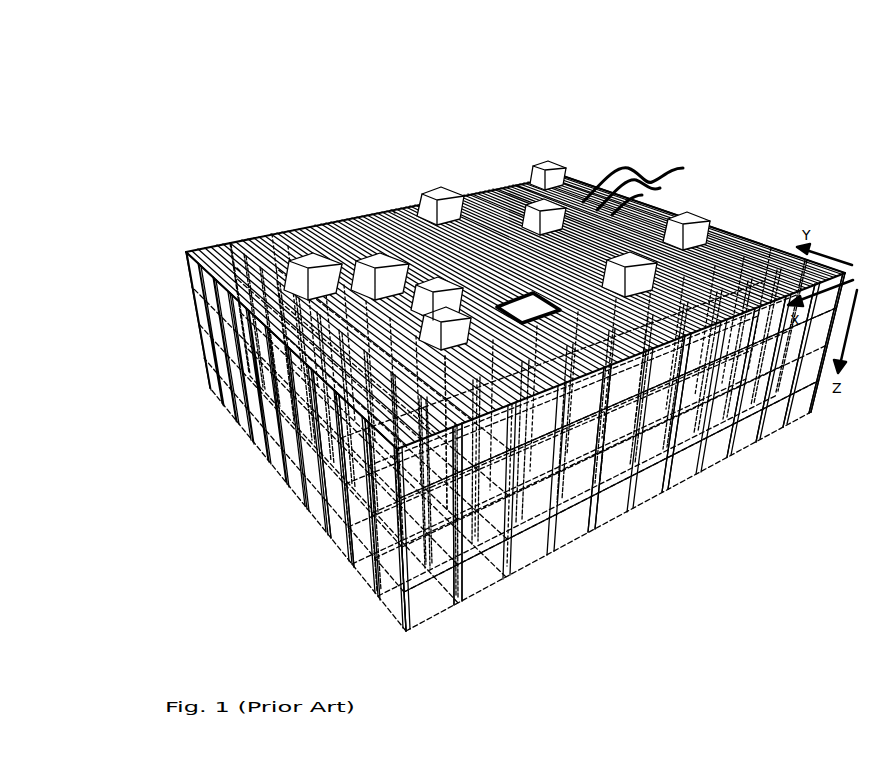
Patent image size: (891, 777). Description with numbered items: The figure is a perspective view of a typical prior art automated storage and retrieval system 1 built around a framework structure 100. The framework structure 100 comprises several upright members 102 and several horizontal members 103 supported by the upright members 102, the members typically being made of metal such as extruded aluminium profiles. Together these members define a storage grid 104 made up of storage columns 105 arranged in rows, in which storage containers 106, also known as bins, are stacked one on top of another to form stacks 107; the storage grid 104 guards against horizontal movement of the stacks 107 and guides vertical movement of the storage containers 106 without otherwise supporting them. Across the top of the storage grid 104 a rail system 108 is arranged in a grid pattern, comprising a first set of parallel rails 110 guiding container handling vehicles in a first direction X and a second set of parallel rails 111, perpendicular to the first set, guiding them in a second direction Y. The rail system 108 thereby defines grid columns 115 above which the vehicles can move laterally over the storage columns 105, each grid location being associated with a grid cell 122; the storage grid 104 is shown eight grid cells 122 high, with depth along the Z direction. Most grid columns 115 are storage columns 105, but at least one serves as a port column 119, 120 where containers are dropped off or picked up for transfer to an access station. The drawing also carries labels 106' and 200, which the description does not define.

The automated storage and retrieval system 1 is at (466, 93).
The framework structure 100 is at (196, 377).
The upright members 102 is at (397, 540).
The horizontal members 103 is at (677, 420).
The storage grid 104 is at (184, 280).
The storage columns 105 is at (325, 463).
The storage containers 106 is at (611, 539).
The inner column 106' is at (517, 526).
The stacks 107 is at (743, 447).
The rail system 108 is at (787, 250).
The first set of parallel rails 110 is at (310, 343).
The second set of parallel rails 111 is at (392, 210).
The grid columns 115 is at (707, 250).
The port column 119 is at (462, 417).
The port column 120 is at (613, 350).
The grid cell 122 is at (510, 298).
The cube element 200 is at (560, 160).